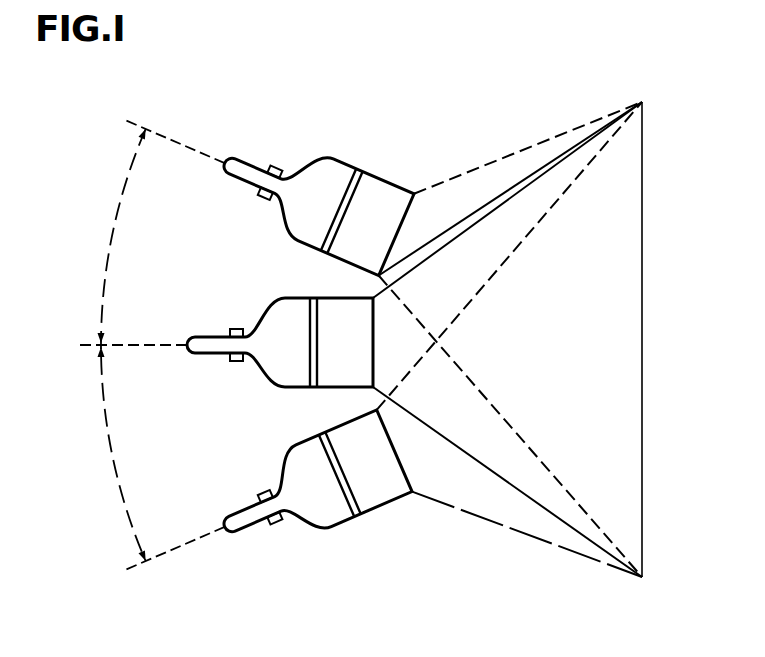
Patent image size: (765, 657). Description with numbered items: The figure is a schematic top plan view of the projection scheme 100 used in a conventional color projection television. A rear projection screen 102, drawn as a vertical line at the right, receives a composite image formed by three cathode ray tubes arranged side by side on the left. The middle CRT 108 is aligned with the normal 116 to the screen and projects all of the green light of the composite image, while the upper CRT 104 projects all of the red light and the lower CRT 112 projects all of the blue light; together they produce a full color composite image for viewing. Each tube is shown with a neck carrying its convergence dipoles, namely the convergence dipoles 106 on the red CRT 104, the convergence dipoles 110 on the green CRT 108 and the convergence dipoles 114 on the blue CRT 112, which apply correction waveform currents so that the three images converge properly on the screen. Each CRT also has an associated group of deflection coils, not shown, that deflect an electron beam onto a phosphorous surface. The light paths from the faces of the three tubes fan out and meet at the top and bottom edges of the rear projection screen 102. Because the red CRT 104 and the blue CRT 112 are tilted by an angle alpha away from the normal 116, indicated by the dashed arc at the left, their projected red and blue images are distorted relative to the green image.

The projection scheme 100 is at (406, 98).
The rear projection screen 102 is at (644, 152).
The CRT 104 is at (335, 173).
The convergence dipoles 106 is at (277, 177).
The CRT 108 is at (285, 307).
The convergence dipoles 110 is at (232, 330).
The CRT 112 is at (298, 453).
The convergence dipoles 114 is at (266, 494).
The normal 116 is at (152, 342).